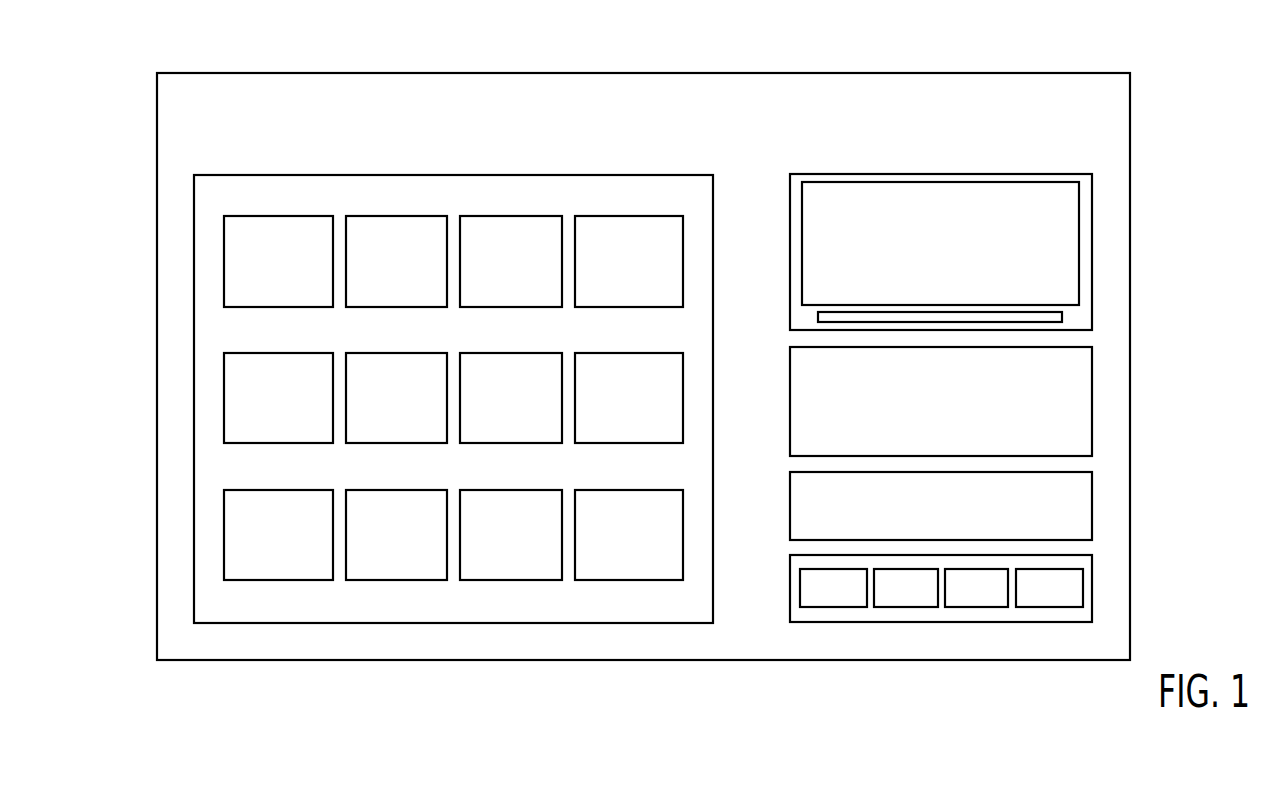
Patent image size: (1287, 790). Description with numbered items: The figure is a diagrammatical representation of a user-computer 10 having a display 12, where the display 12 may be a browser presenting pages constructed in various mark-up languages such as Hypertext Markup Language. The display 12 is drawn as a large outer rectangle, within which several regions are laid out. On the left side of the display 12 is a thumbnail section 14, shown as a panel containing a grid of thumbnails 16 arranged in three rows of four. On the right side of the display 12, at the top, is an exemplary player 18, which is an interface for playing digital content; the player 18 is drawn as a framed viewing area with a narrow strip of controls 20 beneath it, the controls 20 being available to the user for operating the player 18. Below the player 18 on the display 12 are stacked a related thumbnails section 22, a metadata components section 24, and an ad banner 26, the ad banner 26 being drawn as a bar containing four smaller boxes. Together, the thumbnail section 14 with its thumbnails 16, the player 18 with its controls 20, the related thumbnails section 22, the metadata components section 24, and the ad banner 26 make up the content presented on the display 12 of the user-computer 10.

The user-computer 10 is at (136, 98).
The display 12 is at (873, 97).
The thumbnail section 14 is at (240, 395).
The thumbnails 16 is at (247, 258).
The player 18 is at (1070, 243).
The controls 20 is at (1073, 318).
The related thumbnails section 22 is at (1082, 385).
The metadata components section 24 is at (1081, 503).
The ad banner 26 is at (1073, 593).